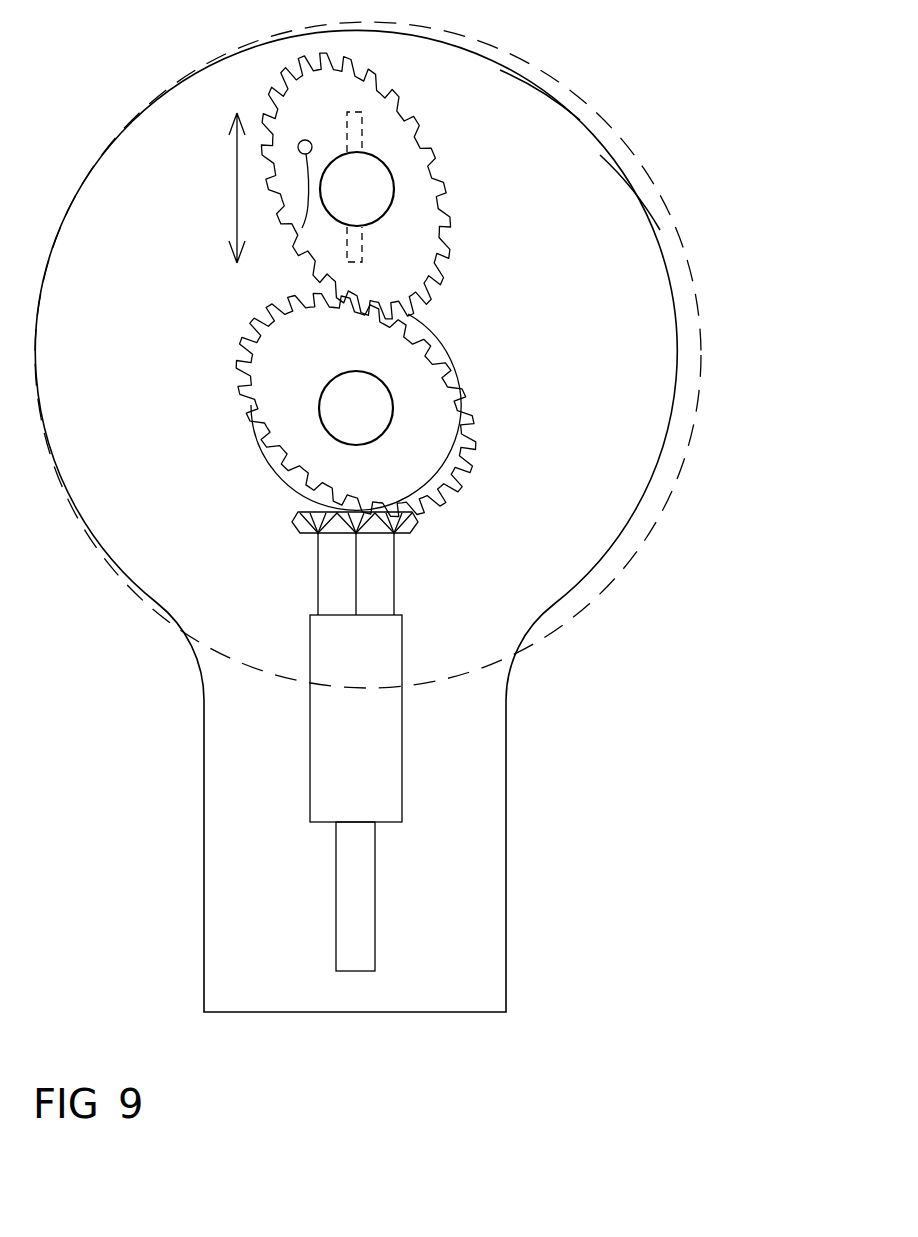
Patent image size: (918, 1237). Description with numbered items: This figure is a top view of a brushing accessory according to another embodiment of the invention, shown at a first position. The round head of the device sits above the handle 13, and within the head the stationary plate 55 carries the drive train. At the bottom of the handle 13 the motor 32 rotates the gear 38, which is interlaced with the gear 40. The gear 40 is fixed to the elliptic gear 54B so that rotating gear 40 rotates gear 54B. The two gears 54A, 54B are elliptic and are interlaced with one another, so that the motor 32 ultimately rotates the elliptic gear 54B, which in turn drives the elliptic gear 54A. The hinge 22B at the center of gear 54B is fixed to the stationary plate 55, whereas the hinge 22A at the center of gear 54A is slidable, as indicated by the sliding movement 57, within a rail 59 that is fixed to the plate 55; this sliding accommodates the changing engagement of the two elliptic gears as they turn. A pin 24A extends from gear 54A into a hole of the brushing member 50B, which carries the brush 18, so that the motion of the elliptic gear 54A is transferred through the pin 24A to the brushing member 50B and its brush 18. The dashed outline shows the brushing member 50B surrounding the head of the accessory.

The handle 13 is at (510, 833).
The brush 18 is at (663, 218).
The center and hinge of gear 54A 22A is at (367, 195).
The center and hinge of gear 54B 22B is at (343, 405).
The pin 24A is at (307, 222).
The motor 32 is at (349, 902).
The gear 38 is at (297, 520).
The gear 40 is at (437, 362).
The brushing member 50B is at (644, 171).
The gear 54A is at (390, 137).
The gear 54B is at (422, 472).
The stationary plate 55 is at (520, 132).
The sliding movement 57 is at (233, 175).
The rail 59 is at (347, 135).